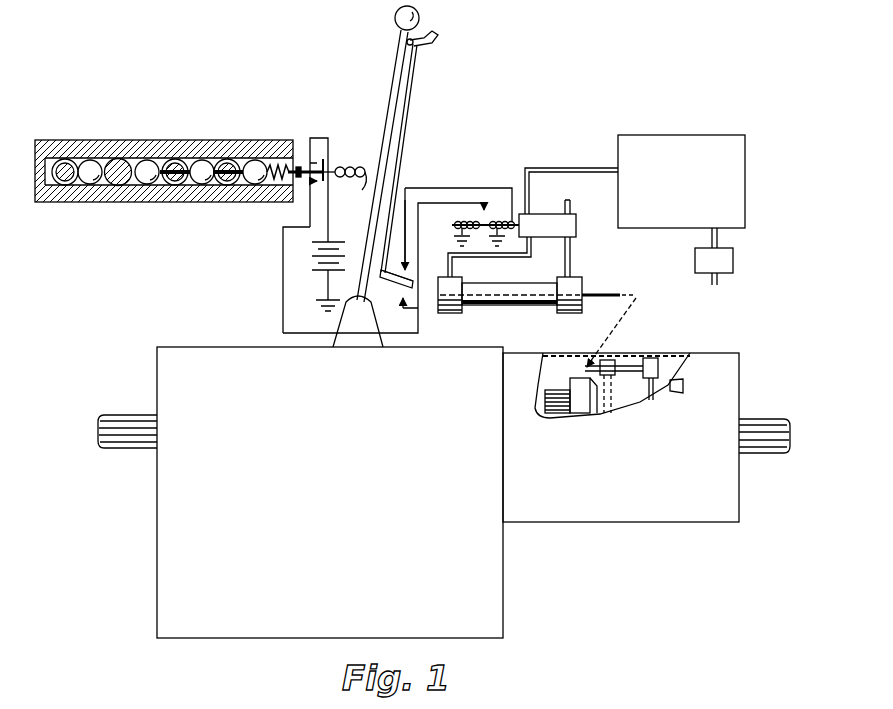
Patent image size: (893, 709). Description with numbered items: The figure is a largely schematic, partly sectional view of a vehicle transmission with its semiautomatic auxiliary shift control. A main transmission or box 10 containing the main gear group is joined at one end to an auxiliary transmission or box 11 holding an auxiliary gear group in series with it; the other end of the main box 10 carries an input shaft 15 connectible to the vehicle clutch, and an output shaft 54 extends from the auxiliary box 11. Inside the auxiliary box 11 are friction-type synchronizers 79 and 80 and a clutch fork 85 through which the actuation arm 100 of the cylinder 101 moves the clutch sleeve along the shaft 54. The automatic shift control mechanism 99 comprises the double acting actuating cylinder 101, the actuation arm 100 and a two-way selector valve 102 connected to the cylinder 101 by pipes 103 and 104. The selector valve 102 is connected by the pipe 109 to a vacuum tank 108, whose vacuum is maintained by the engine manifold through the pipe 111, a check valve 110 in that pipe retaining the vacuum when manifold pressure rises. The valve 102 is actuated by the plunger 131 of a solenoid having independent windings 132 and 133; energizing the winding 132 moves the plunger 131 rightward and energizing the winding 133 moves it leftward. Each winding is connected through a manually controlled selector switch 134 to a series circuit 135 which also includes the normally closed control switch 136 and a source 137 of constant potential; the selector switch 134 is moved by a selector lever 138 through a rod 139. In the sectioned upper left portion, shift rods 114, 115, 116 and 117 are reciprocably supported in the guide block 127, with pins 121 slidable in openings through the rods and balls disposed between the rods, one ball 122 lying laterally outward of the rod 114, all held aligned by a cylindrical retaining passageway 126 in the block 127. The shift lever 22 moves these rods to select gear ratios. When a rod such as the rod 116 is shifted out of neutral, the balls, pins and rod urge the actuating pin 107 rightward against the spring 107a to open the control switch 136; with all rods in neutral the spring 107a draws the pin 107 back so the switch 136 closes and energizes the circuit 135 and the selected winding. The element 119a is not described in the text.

The main transmission box 10 is at (330, 492).
The auxiliary transmission box 11 is at (680, 500).
The input shaft 15 is at (120, 426).
The shift lever 22 is at (393, 88).
The output shaft 54 is at (766, 420).
The synchronizer 79 is at (578, 378).
The synchronizer 80 is at (684, 370).
The clutch fork 85 is at (648, 388).
The automatic shift control mechanism 99 is at (654, 303).
The actuation arm 100 is at (615, 297).
The actuating cylinder 101 is at (520, 306).
The selector valve 102 is at (541, 214).
The pipe 103 is at (489, 257).
The pipe 104 is at (572, 252).
The actuating pin 107 is at (300, 168).
The spring 107a is at (284, 188).
The vacuum tank 108 is at (695, 142).
The pipe 109 is at (582, 168).
The check valve 110 is at (735, 263).
The pipe 111 is at (718, 242).
The shift rod 114 is at (229, 159).
The shift rod 115 is at (176, 159).
The shift rod 116 is at (118, 158).
The shift rod 117 is at (66, 159).
The rod 119a is at (175, 180).
The pin 121 is at (228, 182).
The ball 122 is at (259, 160).
The retaining passageway 126 is at (104, 183).
The guide block 127 is at (63, 193).
The solenoid plunger 131 is at (485, 200).
The solenoid winding 132 is at (464, 220).
The solenoid winding 133 is at (496, 220).
The selector switch 134 is at (398, 292).
The series circuit 135 is at (276, 284).
The control switch 136 is at (326, 173).
The source of constant potential 137 is at (319, 270).
The selector lever 138 is at (434, 40).
The rod 139 is at (409, 96).